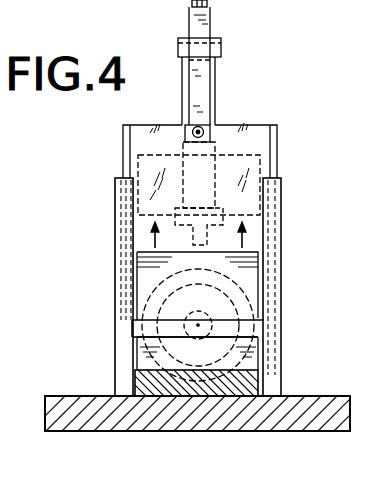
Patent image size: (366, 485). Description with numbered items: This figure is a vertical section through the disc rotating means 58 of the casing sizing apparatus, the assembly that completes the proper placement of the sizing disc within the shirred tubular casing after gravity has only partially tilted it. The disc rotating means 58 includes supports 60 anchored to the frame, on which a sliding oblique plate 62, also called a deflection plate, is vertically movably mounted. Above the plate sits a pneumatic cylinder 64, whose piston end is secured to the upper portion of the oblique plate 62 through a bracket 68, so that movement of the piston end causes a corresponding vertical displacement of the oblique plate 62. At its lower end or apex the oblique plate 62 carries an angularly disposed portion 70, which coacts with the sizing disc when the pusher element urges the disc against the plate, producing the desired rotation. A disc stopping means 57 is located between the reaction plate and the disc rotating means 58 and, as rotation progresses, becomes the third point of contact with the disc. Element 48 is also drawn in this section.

The shaft 48 is at (162, 308).
The disc stopping means 57 is at (253, 358).
The disc rotating means 58 is at (104, 262).
The supports 60 is at (121, 220).
The oblique plate 62 is at (136, 145).
The pneumatic cylinder 64 is at (215, 67).
The bracket 68 is at (202, 95).
The angularly disposed portion 70 is at (262, 168).